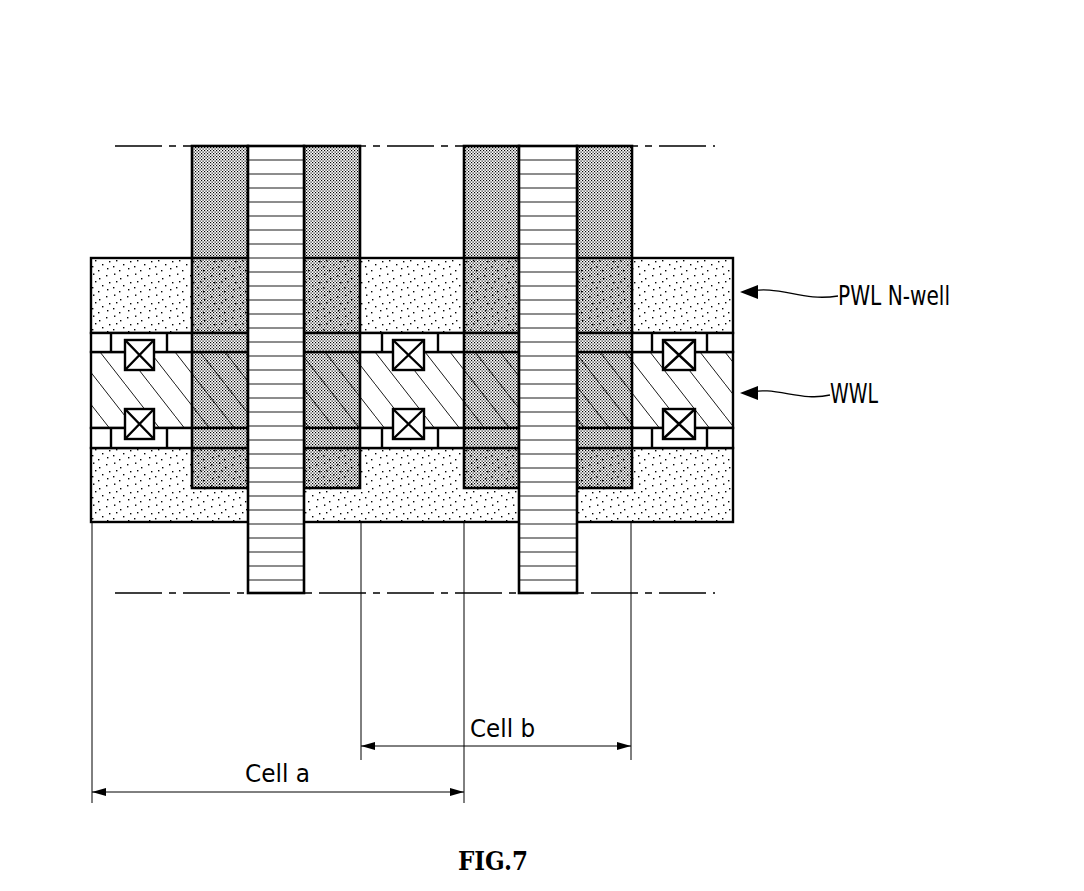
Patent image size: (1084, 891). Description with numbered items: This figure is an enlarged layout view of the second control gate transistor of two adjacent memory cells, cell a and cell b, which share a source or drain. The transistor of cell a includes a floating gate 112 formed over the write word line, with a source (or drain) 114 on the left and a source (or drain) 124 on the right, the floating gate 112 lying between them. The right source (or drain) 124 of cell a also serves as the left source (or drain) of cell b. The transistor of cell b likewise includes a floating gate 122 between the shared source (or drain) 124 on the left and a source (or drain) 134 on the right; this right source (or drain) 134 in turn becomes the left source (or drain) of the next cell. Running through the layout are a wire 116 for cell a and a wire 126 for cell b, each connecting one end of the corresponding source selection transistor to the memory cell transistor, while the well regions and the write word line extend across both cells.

The floating gate 112 is at (233, 155).
The wire 116 is at (268, 158).
The floating gate 122 is at (497, 480).
The wire 126 is at (549, 580).
The source (or drain) 114 is at (117, 443).
The source (or drain) 124 is at (414, 445).
The source (or drain) 134 is at (705, 437).